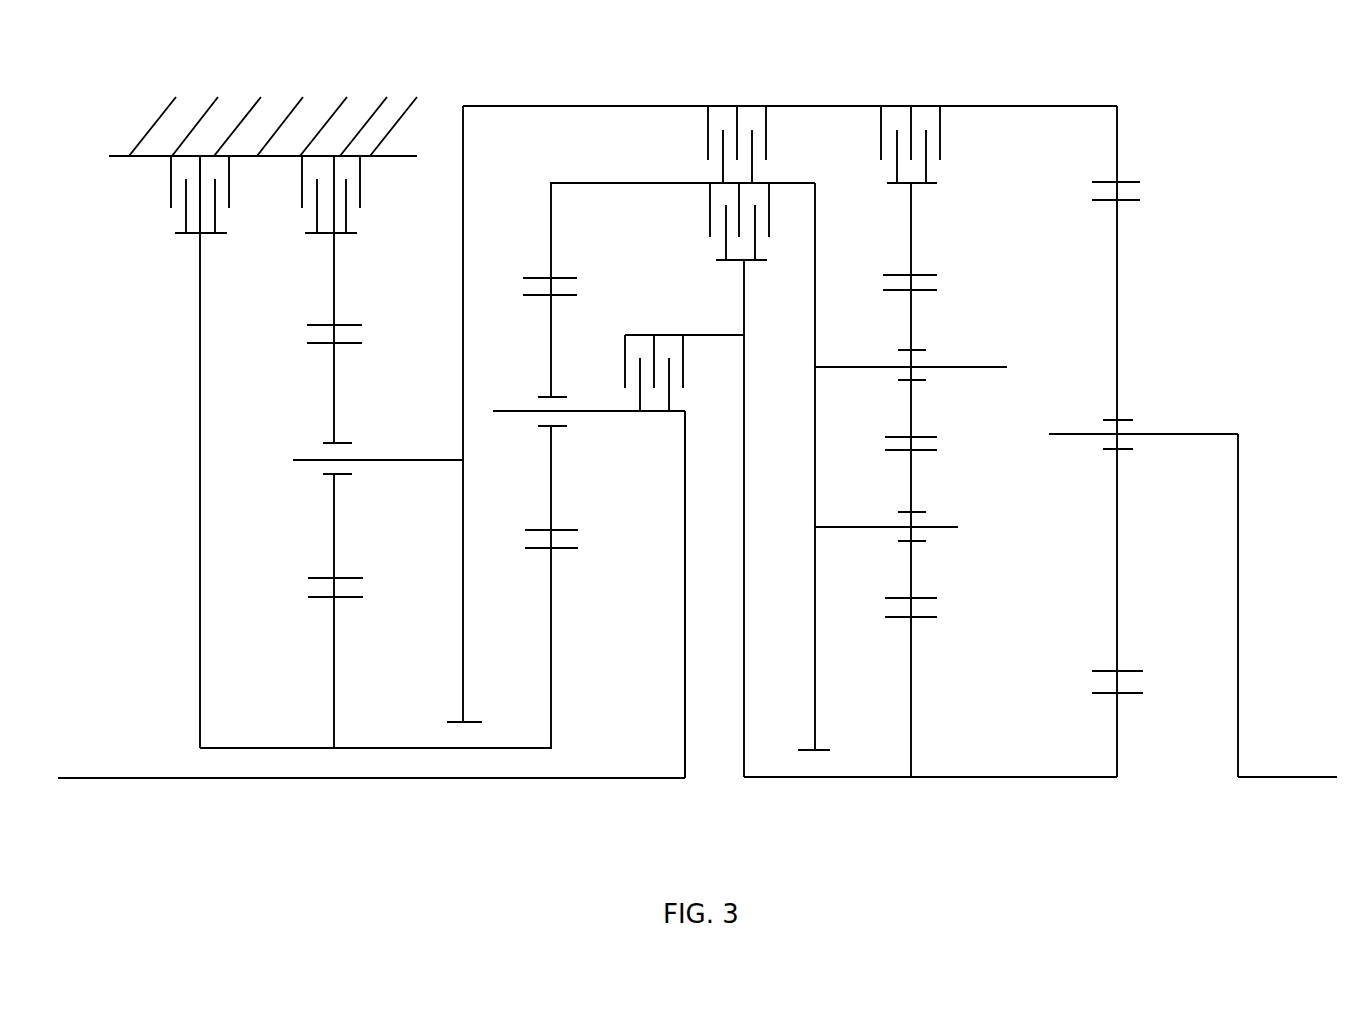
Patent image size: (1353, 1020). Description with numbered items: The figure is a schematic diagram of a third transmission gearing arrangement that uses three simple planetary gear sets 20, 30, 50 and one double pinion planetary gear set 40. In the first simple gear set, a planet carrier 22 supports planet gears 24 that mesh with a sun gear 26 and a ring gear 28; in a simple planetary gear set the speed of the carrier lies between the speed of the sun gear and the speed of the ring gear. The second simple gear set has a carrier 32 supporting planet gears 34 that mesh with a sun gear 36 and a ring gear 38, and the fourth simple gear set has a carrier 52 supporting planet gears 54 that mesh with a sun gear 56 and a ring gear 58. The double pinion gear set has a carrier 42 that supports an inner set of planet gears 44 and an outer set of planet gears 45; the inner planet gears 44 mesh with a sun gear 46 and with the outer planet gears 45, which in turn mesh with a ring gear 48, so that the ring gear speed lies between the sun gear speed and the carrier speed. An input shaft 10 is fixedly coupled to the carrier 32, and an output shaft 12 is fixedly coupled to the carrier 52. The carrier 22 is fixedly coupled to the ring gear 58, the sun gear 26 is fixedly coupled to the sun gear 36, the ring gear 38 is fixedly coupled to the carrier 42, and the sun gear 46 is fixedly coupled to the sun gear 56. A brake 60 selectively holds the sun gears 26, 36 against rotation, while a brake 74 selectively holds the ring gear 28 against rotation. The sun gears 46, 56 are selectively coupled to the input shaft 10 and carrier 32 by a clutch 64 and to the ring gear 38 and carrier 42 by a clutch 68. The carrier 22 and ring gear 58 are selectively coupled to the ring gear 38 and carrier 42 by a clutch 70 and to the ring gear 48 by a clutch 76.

The input shaft 10 is at (193, 778).
The output shaft 12 is at (1298, 777).
The first planetary gear set 20 is at (375, 496).
The planet carrier 22 is at (463, 437).
The planet gears 24 is at (337, 403).
The sun gear 26 is at (335, 637).
The ring gear 28 is at (334, 288).
The second planetary gear set 30 is at (589, 619).
The planet carrier 32 is at (685, 483).
The planet gears 34 is at (553, 353).
The sun gear 36 is at (553, 587).
The ring gear 38 is at (551, 240).
The double pinion planetary gear set 40 is at (930, 593).
The planet carrier 42 is at (817, 475).
The inner planet gears 44 is at (911, 488).
The outer planet gears 45 is at (911, 327).
The sun gear 46 is at (911, 683).
The ring gear 48 is at (911, 232).
The fourth planetary gear set 50 is at (1143, 629).
The planet carrier 52 is at (1215, 434).
The planet gears 54 is at (1117, 375).
The sun gear 56 is at (1118, 737).
The ring gear 58 is at (1117, 155).
The brake 60 is at (171, 179).
The clutch 64 is at (683, 352).
The clutch 68 is at (710, 207).
The clutch 70 is at (708, 135).
The brake 74 is at (302, 179).
The clutch 76 is at (938, 152).